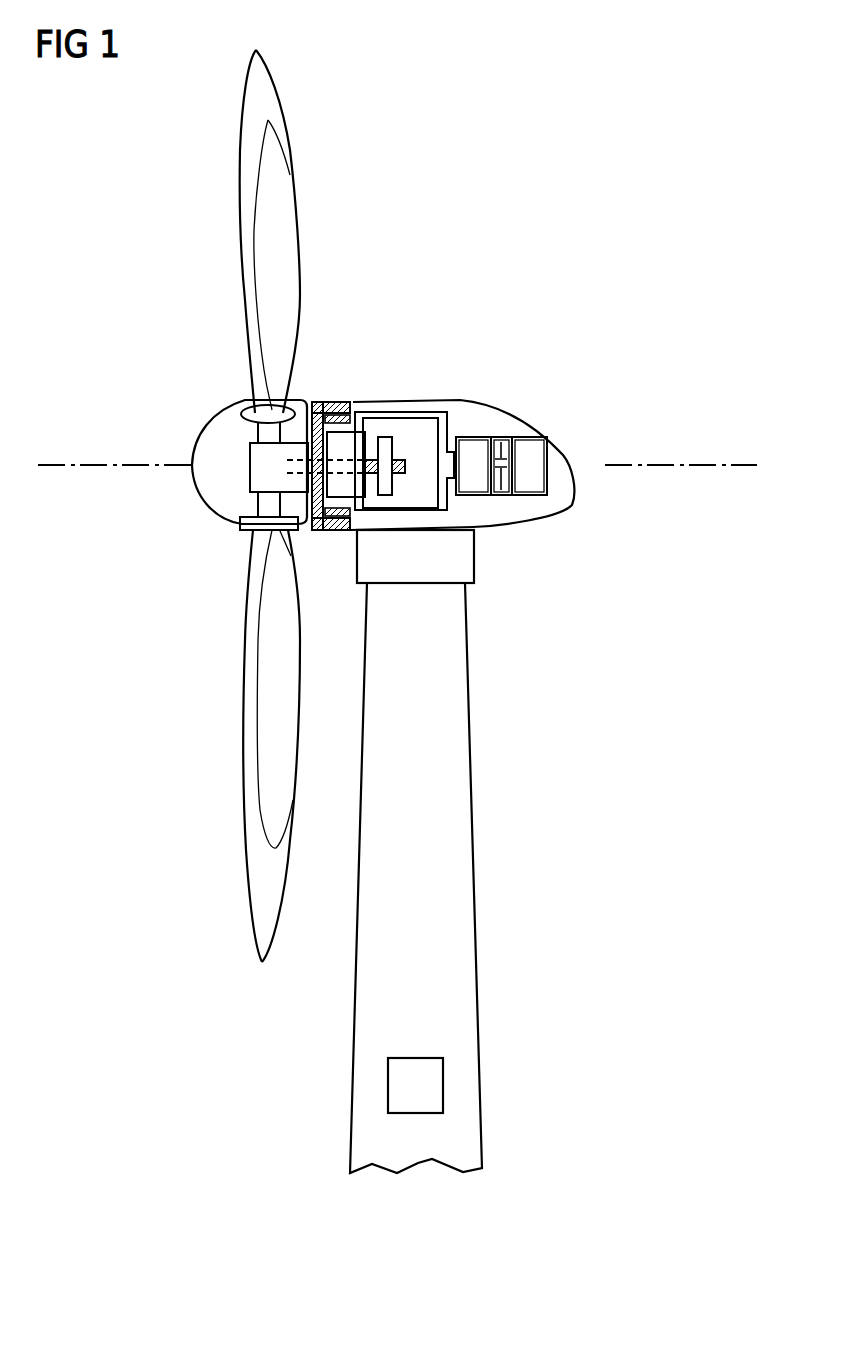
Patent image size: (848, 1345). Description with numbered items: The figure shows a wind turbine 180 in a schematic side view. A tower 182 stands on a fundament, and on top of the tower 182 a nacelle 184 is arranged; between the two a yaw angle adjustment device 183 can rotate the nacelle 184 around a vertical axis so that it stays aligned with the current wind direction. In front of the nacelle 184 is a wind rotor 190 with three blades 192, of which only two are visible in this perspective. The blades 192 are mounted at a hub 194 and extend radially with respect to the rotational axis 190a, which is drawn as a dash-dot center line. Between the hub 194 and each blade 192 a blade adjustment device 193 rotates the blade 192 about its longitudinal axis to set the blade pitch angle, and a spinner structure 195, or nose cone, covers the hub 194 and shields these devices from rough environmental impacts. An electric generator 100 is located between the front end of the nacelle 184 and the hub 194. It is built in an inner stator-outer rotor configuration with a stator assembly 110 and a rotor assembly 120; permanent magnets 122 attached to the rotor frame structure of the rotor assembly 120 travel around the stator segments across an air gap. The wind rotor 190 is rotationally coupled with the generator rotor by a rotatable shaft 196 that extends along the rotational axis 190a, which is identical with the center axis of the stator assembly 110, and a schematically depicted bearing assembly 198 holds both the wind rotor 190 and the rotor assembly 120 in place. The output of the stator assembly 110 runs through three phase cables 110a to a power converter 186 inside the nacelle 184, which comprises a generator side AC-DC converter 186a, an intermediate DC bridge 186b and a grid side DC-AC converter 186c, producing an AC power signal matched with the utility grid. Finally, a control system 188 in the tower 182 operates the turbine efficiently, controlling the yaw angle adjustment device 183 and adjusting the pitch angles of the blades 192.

The electric generator 100 is at (338, 536).
The stator assembly 110 is at (353, 478).
The cables 110a is at (413, 508).
The rotor assembly 120 is at (333, 400).
The permanent magnets 122 is at (318, 532).
The wind turbine 180 is at (650, 249).
The tower 182 is at (470, 732).
The yaw angle adjustment device 183 is at (463, 565).
The nacelle 184 is at (573, 492).
The power converter 186 is at (519, 426).
The generator side AC-DC converter 186a is at (473, 495).
The intermediate DC bridge 186b is at (502, 495).
The grid side DC-AC converter 186c is at (533, 498).
The control system 188 is at (413, 1058).
The wind rotor 190 is at (150, 377).
The rotational axis 190a is at (55, 464).
The blades 192 is at (247, 218).
The blade adjustment device 193 is at (240, 405).
The hub 194 is at (263, 476).
The spinner structure 195 is at (212, 492).
The rotatable shaft 196 is at (285, 463).
The bearing assembly 198 is at (385, 443).